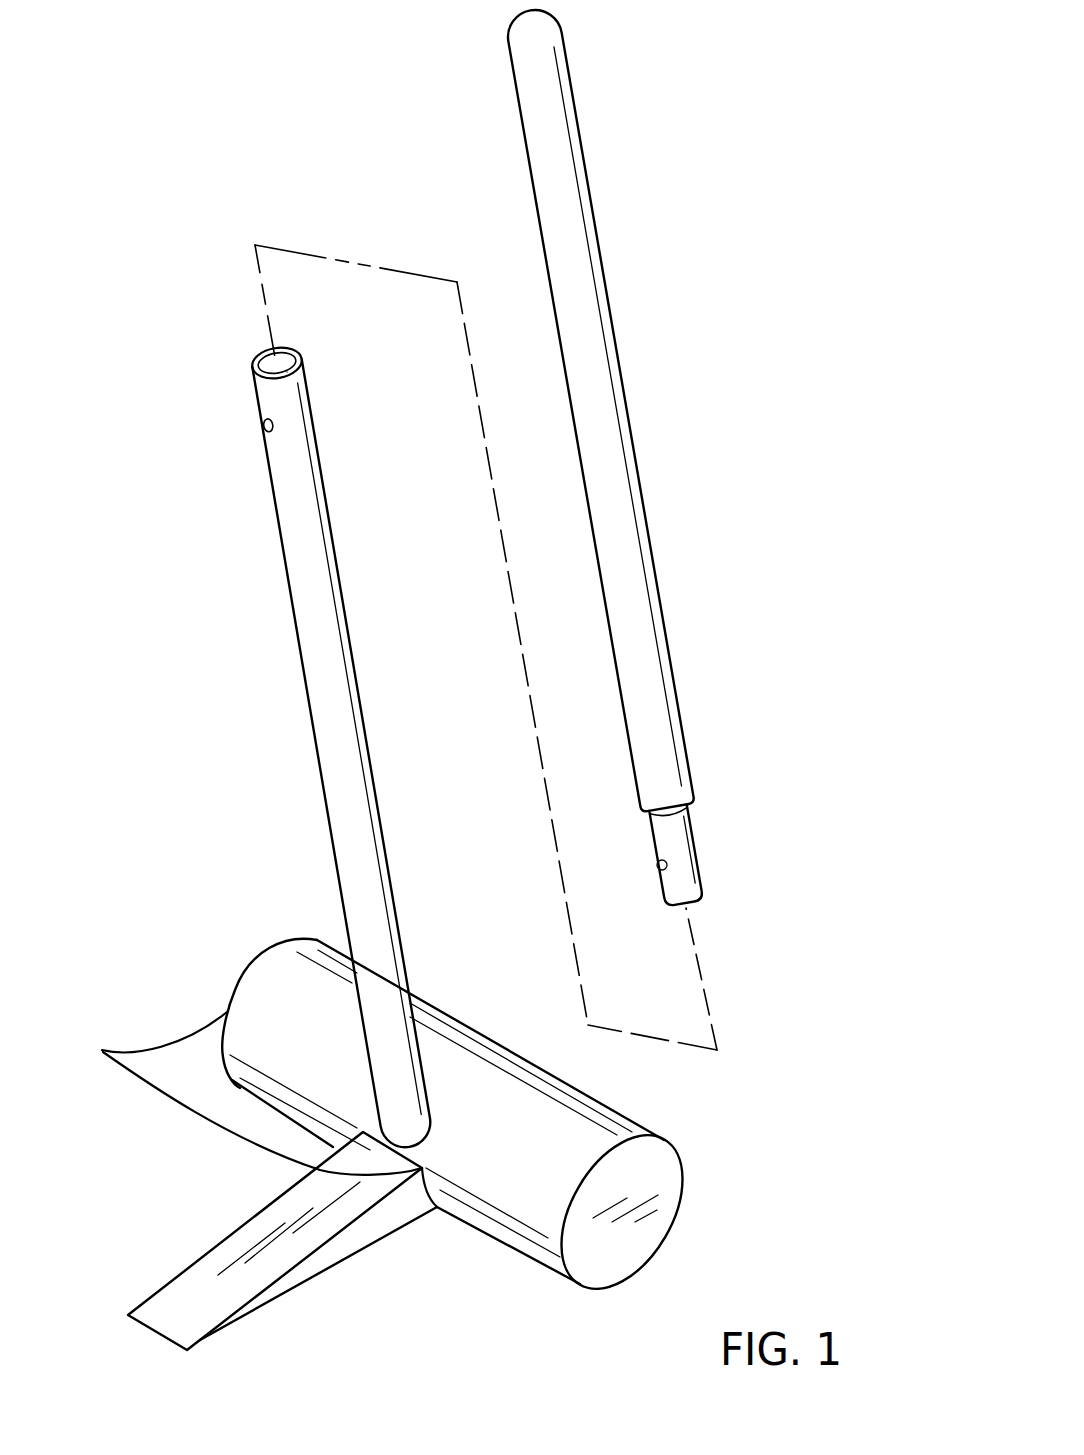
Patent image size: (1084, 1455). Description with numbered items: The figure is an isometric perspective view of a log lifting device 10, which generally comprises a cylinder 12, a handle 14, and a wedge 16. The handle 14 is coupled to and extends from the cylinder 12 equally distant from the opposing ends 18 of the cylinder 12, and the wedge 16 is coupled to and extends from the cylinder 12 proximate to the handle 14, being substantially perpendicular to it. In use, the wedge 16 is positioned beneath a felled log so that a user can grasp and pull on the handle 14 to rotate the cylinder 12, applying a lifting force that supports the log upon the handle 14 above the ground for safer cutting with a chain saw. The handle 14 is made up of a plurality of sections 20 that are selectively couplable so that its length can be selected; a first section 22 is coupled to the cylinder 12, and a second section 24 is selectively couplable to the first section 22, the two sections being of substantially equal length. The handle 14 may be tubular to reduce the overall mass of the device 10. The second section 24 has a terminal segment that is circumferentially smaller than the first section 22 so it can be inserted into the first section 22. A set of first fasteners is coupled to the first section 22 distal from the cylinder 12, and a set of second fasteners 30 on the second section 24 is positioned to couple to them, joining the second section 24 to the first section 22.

The log lifting device 10 is at (803, 132).
The cylinder 12 is at (607, 1122).
The handle 14 is at (627, 722).
The wedge 16 is at (235, 1265).
The opposing ends 18 is at (103, 1051).
The plurality of sections 20 is at (587, 503).
The first section 22 is at (332, 523).
The second section 24 is at (626, 402).
The second fasteners 30 is at (655, 866).